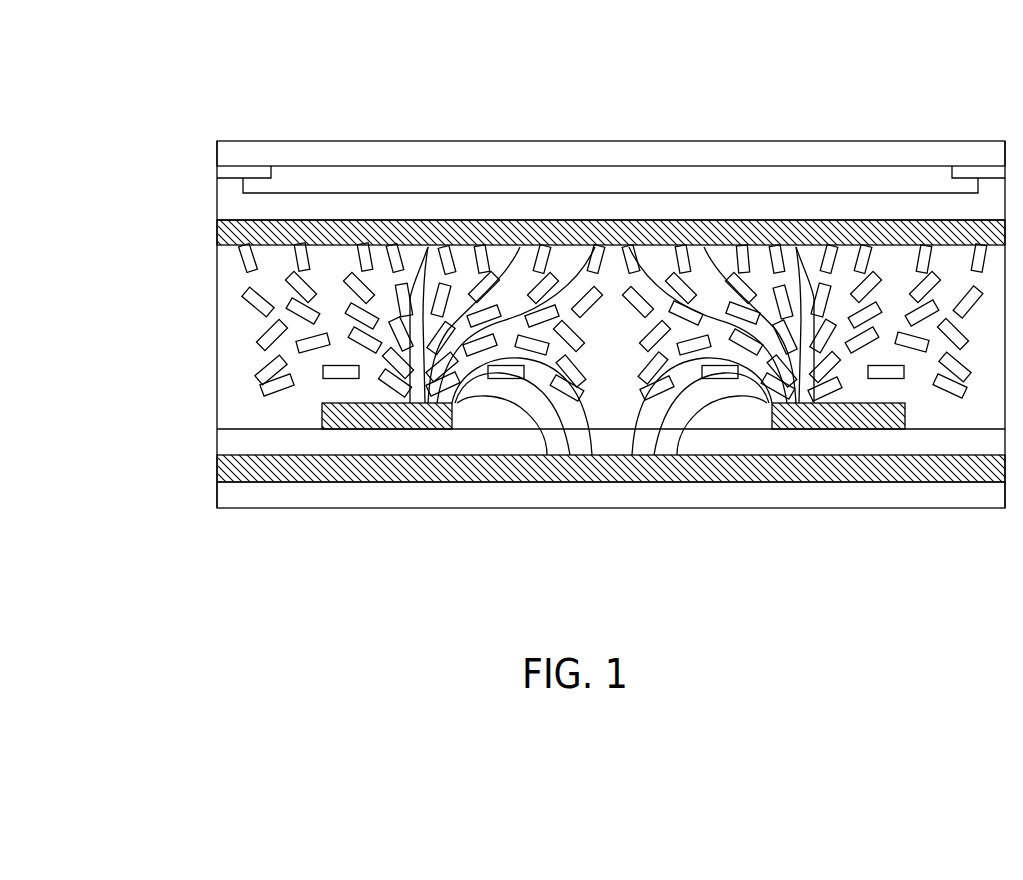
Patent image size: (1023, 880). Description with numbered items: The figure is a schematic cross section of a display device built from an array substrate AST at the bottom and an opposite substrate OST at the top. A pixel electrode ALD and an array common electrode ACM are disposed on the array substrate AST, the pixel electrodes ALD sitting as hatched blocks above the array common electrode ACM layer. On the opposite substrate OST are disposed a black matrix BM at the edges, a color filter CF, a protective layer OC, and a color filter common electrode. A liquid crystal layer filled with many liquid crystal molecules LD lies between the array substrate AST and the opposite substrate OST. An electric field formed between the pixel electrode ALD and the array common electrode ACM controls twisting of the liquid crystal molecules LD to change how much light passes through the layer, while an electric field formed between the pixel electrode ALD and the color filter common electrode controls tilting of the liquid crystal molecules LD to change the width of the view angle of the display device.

The opposite substrate OST is at (614, 150).
The black matrix BM is at (967, 172).
The color filter CF is at (437, 175).
The protective layer OC is at (743, 210).
The liquid crystal molecule LD is at (260, 393).
The pixel electrode ALD is at (380, 422).
The array common electrode ACM is at (467, 467).
The array substrate AST is at (591, 505).